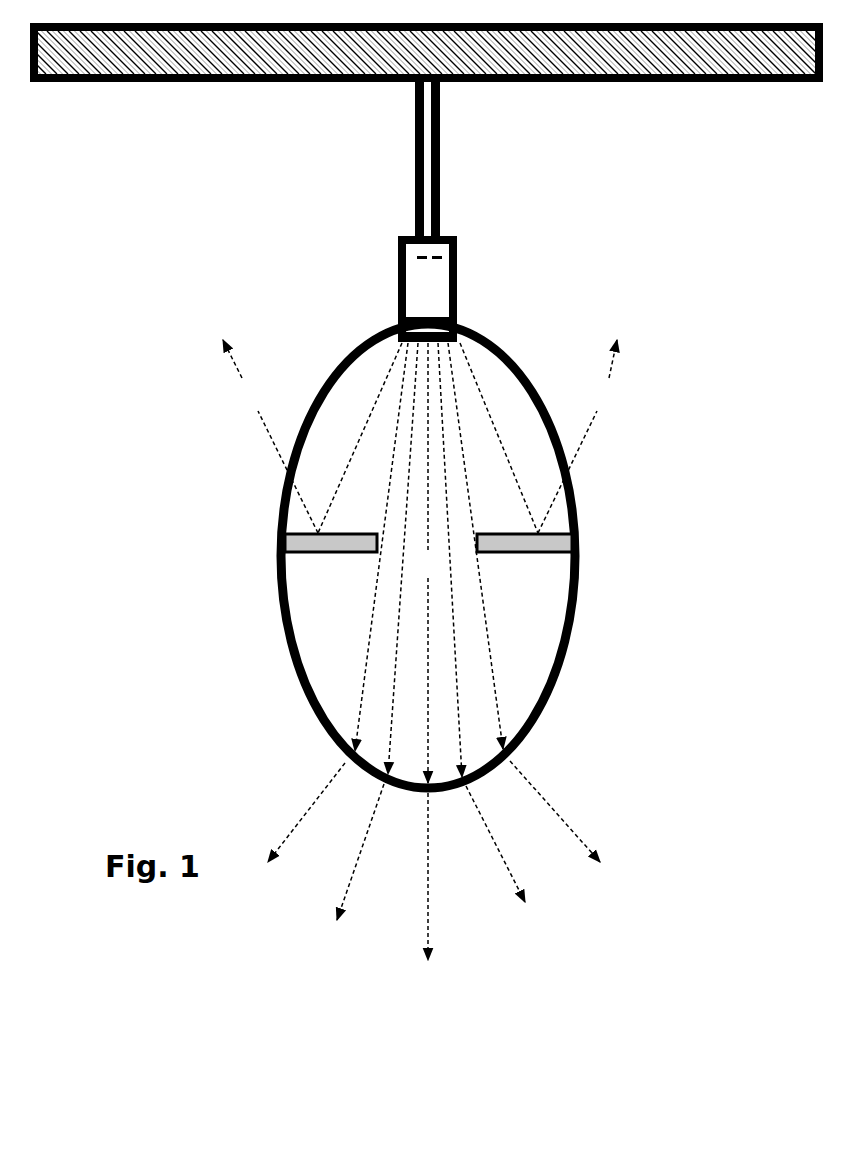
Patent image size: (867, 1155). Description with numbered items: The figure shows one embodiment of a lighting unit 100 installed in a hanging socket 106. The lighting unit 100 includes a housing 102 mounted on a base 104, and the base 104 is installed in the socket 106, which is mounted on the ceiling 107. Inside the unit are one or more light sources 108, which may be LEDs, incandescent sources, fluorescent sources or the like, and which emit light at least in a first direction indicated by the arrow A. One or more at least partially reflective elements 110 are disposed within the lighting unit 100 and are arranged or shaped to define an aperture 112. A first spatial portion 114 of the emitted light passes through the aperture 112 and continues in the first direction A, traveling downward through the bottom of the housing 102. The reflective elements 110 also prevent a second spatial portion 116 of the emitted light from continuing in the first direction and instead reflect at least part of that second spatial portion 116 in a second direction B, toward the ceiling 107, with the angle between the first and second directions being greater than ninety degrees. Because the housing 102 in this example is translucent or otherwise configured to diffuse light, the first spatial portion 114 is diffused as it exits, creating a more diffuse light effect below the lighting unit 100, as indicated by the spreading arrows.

The lighting unit 100 is at (424, 493).
The housing 102 is at (278, 590).
The base 104 is at (447, 237).
The socket 106 is at (397, 285).
The ceiling 107 is at (550, 82).
The light source 108 is at (437, 317).
The reflective element 110 is at (305, 533).
The aperture 112 is at (378, 548).
The first spatial portion 114 is at (522, 651).
The second spatial portion 116 is at (305, 350).